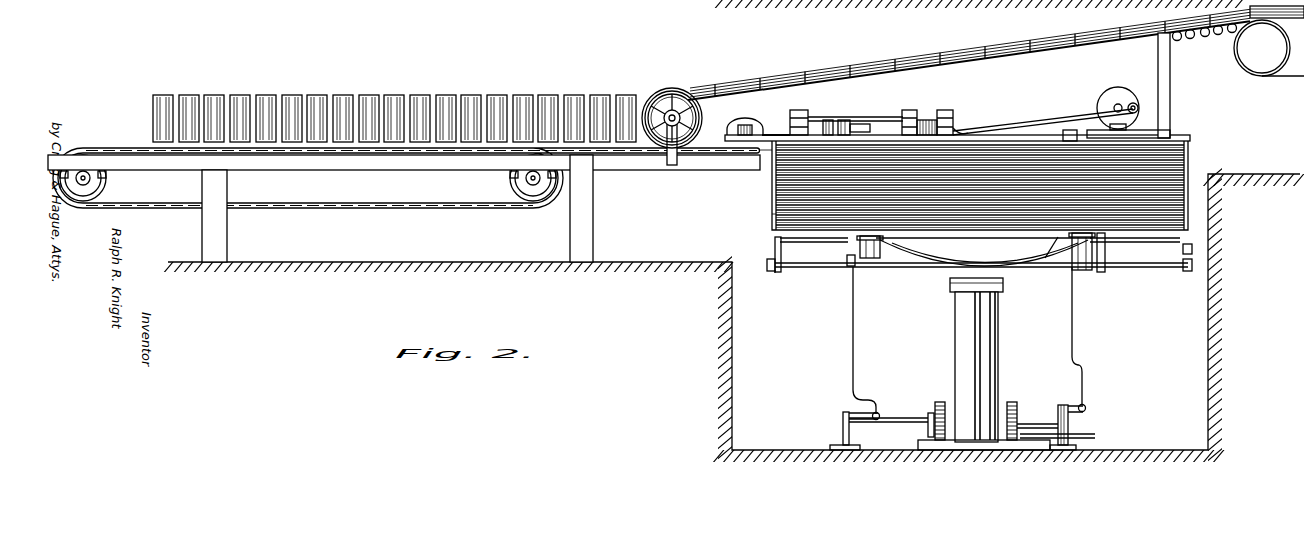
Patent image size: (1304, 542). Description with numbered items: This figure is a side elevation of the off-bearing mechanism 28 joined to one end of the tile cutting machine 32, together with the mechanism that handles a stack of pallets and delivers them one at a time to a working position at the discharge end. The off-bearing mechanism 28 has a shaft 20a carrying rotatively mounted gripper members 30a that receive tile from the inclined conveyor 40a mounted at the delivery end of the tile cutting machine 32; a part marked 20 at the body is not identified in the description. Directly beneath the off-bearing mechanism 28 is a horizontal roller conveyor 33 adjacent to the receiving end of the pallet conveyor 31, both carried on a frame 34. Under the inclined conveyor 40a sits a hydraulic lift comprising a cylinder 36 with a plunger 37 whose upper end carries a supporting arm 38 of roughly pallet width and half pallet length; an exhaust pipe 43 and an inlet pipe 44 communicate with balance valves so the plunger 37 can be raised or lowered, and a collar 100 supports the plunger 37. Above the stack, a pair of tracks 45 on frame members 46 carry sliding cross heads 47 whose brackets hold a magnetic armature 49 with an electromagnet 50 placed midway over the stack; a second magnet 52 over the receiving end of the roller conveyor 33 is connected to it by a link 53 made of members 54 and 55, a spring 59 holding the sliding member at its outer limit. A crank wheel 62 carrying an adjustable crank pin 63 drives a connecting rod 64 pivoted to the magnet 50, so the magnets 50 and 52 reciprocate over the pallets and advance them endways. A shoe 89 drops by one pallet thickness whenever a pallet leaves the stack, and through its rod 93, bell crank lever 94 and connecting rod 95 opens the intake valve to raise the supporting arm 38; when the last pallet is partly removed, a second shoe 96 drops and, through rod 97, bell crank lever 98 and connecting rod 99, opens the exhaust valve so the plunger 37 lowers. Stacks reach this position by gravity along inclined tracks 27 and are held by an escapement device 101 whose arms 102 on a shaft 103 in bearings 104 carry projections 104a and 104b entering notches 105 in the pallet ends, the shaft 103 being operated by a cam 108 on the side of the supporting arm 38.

The machine frame / body 20 is at (492, 142).
The shaft 20a is at (674, 166).
The tracks 27 is at (858, 247).
The off-bearing mechanism 28 is at (674, 88).
The gripper members 30a is at (652, 103).
The pallet conveyor 31 is at (404, 209).
The tile cutting machine 32 is at (1252, 66).
The roller conveyor 33 is at (633, 160).
The frame 34 is at (578, 243).
The cylinder 36 is at (955, 349).
The plunger 37 is at (999, 288).
The supporting arm 38 is at (930, 272).
The inclined conveyor 40a is at (815, 72).
The exhaust pipe 43 is at (1096, 437).
The inlet pipe 44 is at (893, 441).
The tracks 45 is at (889, 117).
The frame members 46 is at (806, 115).
The cross heads 47 is at (909, 118).
The magnetic armature 49 is at (976, 134).
The electromagnet 50 is at (930, 120).
The second magnet 52 is at (758, 117).
The link 53 is at (856, 115).
The member 54 is at (773, 137).
The member 55 is at (996, 356).
The spring 59 is at (835, 115).
The crank wheel 62 is at (1128, 112).
The crank pin 63 is at (1137, 104).
The connecting rod 64 is at (1040, 124).
The shoe 89 is at (770, 152).
The rod 93 is at (855, 351).
The bell crank lever 94 is at (848, 412).
The connecting rod 95 is at (915, 418).
The second shoe 96 is at (1070, 130).
The rod 97 is at (1073, 314).
The bell crank lever 98 is at (1086, 406).
The connecting rod 99 is at (1040, 420).
The collar 100 is at (930, 306).
The escapement device 101 is at (773, 273).
The arms 102 is at (767, 265).
The shaft 103 is at (826, 269).
The bearings 104 is at (860, 269).
The projection 104a is at (775, 246).
The projection 104b is at (1106, 255).
The notches 105 is at (772, 217).
The cam 108 is at (1044, 263).